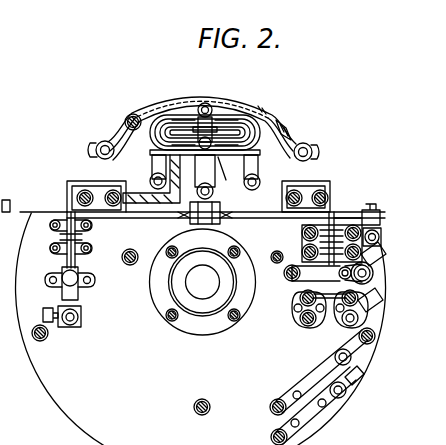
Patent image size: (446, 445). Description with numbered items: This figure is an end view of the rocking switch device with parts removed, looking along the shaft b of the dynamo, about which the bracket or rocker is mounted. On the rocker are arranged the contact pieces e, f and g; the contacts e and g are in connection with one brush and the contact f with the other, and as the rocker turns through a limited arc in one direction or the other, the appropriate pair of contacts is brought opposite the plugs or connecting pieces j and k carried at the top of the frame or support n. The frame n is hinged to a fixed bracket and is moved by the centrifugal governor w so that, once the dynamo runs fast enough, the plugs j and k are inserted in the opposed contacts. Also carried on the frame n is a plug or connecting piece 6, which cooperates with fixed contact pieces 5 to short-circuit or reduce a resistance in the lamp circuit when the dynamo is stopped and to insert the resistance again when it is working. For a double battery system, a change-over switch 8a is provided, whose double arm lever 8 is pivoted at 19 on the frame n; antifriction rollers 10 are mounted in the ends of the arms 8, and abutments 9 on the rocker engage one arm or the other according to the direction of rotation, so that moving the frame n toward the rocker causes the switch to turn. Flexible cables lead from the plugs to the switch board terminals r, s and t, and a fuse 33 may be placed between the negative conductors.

The change-over switch 8a is at (125, 111).
The abutment 9 is at (124, 125).
The antifriction roller 10 is at (96, 153).
The double arm lever 8 is at (296, 112).
The pivot 19 is at (215, 160).
The frame or support n is at (228, 182).
The contact piece e is at (175, 98).
The plug or connecting piece j is at (193, 103).
The plug or connecting piece k is at (217, 106).
The contact piece f is at (262, 106).
The contact piece g is at (306, 142).
The plug or connecting piece 6 is at (338, 200).
The contact piece 5 is at (366, 210).
The shaft b is at (200, 290).
The terminal r is at (285, 273).
The terminal s is at (296, 300).
The fuse 33 is at (325, 326).
The terminal t is at (271, 404).
The centrifugal governor w is at (272, 436).
The plate v is at (201, 329).